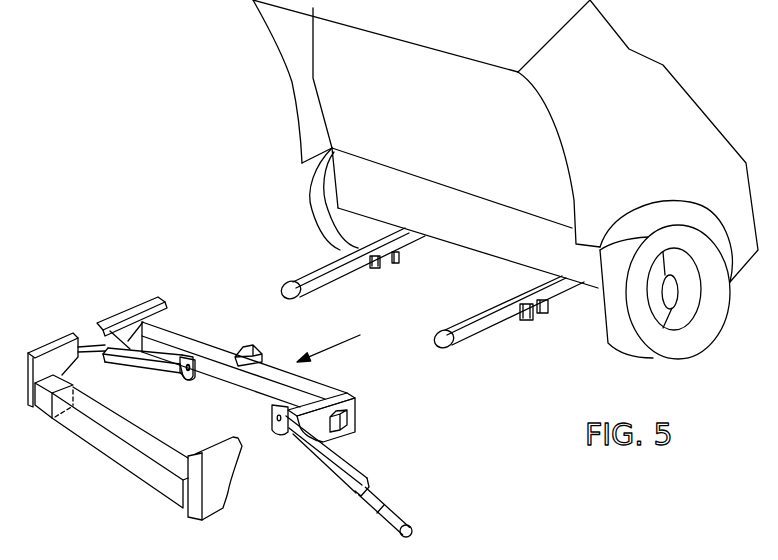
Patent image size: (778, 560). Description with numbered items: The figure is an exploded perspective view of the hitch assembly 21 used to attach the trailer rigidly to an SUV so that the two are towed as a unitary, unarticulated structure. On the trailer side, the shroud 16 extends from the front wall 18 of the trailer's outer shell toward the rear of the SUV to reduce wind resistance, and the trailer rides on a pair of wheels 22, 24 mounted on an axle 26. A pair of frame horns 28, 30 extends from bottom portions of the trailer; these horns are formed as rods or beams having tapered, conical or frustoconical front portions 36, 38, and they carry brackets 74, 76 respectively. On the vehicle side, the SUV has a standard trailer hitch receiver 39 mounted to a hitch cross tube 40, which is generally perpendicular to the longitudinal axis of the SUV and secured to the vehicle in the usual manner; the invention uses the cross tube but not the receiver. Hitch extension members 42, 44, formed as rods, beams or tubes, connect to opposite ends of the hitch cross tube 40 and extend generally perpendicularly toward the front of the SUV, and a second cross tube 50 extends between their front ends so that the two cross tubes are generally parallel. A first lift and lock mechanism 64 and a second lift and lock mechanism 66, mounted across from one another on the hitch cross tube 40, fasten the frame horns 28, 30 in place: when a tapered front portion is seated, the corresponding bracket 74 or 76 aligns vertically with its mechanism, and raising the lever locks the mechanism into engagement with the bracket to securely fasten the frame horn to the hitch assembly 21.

The shroud 16 is at (291, 80).
The front wall 18 is at (432, 126).
The hitch assembly 21 is at (190, 181).
The wheel 22 is at (624, 352).
The wheel 24 is at (312, 202).
The axle 26 is at (677, 307).
The frame horn 28 is at (475, 337).
The frame horn 30 is at (318, 289).
The front portion 36 is at (438, 333).
The front portion 38 is at (288, 284).
The trailer hitch receiver 39 is at (252, 347).
The hitch cross tube 40 is at (187, 330).
The hitch extension member 42 is at (215, 500).
The hitch extension member 44 is at (115, 320).
The cross tube 50 is at (130, 472).
The first lift and lock mechanism 64 is at (406, 478).
The second lift and lock mechanism 66 is at (153, 390).
The bracket 74 is at (548, 337).
The bracket 76 is at (401, 267).